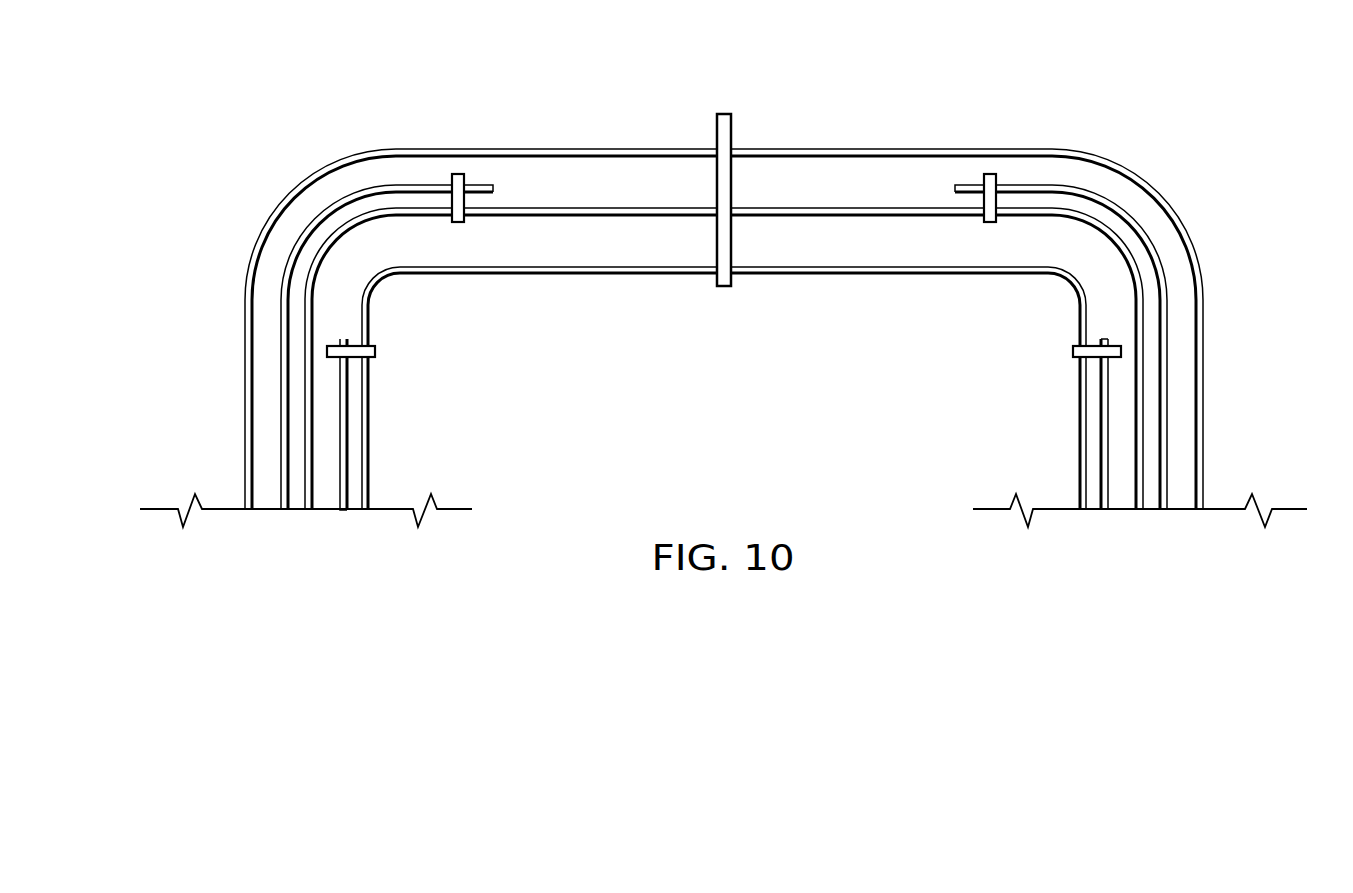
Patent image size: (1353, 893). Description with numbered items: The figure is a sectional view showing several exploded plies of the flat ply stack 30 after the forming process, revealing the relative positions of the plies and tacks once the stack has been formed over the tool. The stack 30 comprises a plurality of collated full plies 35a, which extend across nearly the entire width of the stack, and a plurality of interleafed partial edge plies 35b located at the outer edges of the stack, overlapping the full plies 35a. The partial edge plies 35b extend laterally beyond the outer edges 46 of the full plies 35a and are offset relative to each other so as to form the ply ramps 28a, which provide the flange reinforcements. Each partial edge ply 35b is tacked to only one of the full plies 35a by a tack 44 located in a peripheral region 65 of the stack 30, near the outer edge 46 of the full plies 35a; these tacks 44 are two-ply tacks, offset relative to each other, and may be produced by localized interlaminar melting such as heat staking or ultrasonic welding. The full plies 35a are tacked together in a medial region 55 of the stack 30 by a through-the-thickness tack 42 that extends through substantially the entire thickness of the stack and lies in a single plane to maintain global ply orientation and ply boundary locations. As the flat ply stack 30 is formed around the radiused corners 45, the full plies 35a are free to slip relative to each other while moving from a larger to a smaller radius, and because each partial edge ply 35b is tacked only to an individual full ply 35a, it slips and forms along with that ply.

The flat ply stack 30 is at (539, 100).
The ply ramps 28a is at (188, 382).
The full plies 35a is at (838, 148).
The partial edge plies 35b is at (281, 438).
The radiused corners 45 is at (230, 176).
The outer edges of the full plies 46 is at (201, 289).
The peripheral region 65 is at (416, 138).
The tacks 44 is at (466, 175).
The through-the-thickness tack 42 is at (717, 130).
The medial region 55 is at (727, 98).